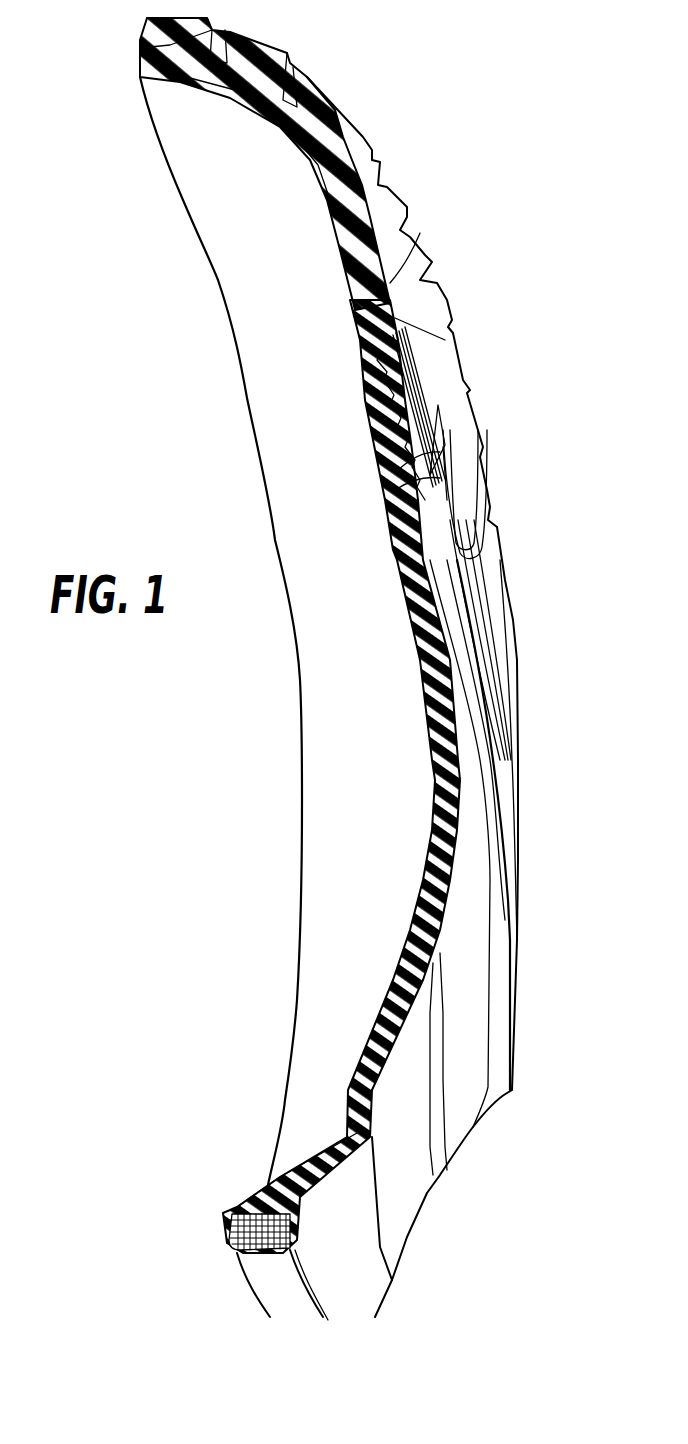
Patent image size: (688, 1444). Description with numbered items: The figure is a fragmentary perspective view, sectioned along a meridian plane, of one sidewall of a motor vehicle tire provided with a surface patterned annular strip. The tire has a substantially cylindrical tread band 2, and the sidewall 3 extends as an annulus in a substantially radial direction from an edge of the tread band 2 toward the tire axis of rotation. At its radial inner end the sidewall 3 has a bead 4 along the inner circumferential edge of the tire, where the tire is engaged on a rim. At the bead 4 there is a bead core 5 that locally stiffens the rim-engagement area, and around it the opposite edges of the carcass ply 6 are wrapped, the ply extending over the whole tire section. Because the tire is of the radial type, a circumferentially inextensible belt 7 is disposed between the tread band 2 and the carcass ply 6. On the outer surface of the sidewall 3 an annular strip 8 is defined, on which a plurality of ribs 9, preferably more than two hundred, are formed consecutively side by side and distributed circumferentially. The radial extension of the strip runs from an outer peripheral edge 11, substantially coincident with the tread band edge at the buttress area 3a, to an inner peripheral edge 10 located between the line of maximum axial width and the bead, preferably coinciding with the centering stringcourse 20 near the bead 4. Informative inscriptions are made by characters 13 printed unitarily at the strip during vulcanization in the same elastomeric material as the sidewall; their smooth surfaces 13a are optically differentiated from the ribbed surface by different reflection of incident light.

The tread band 2 is at (165, 33).
The sidewall 3 is at (527, 950).
The buttress area 3a is at (420, 233).
The bead 4 is at (233, 1212).
The bead core 5 is at (228, 1228).
The carcass ply 6 is at (423, 622).
The belt 7 is at (318, 103).
The annular strip 8 is at (483, 577).
The ribs 9 is at (383, 368).
The inner peripheral edge 10 is at (417, 533).
The outer peripheral edge 11 is at (407, 350).
The characters 13 is at (398, 493).
The smooth surfaces 13a is at (443, 433).
The centering stringcourse 20 is at (432, 1157).